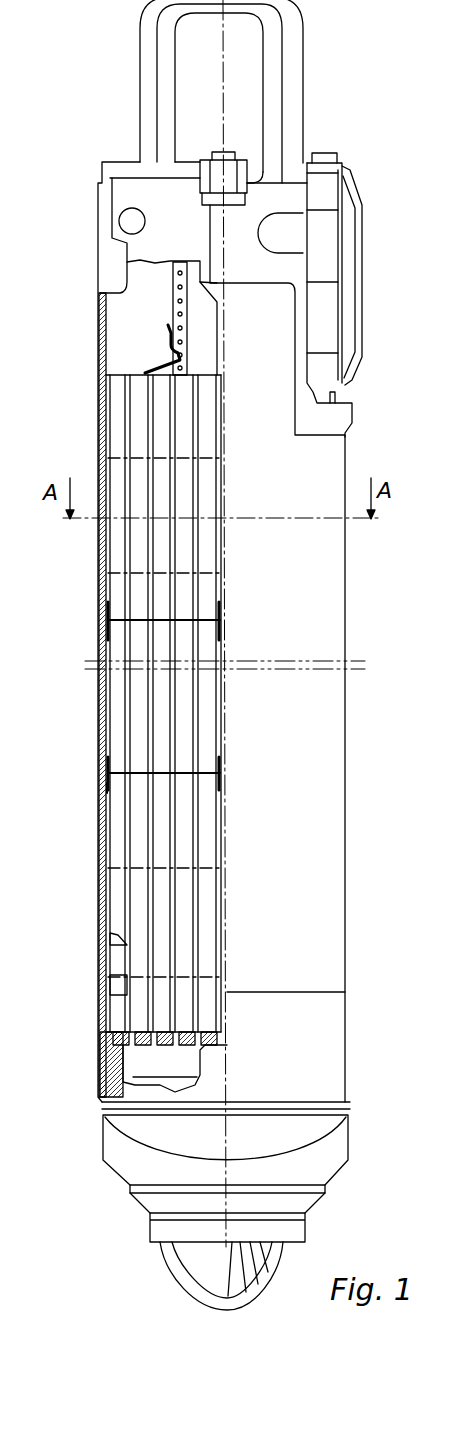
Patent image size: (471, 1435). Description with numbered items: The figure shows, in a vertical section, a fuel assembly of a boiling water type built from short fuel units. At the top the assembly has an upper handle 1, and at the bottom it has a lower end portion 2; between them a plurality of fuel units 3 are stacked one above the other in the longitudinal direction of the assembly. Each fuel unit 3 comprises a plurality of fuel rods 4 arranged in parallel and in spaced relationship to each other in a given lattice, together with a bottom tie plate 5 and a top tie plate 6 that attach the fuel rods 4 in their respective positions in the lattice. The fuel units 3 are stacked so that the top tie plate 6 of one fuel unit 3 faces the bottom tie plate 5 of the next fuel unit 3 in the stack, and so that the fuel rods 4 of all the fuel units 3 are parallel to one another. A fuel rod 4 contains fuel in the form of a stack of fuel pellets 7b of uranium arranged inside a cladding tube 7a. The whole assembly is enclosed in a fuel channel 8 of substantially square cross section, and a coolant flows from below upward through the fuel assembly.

The upper handle 1 is at (300, 76).
The lower end portion 2 is at (287, 1228).
The fuel unit 3 is at (107, 717).
The fuel rod 4 is at (163, 852).
The bottom tie plate 5 is at (103, 765).
The top tie plate 6 is at (100, 787).
The cladding tube 7a is at (110, 923).
The fuel pellet 7b is at (120, 985).
The fuel channel 8 is at (347, 770).